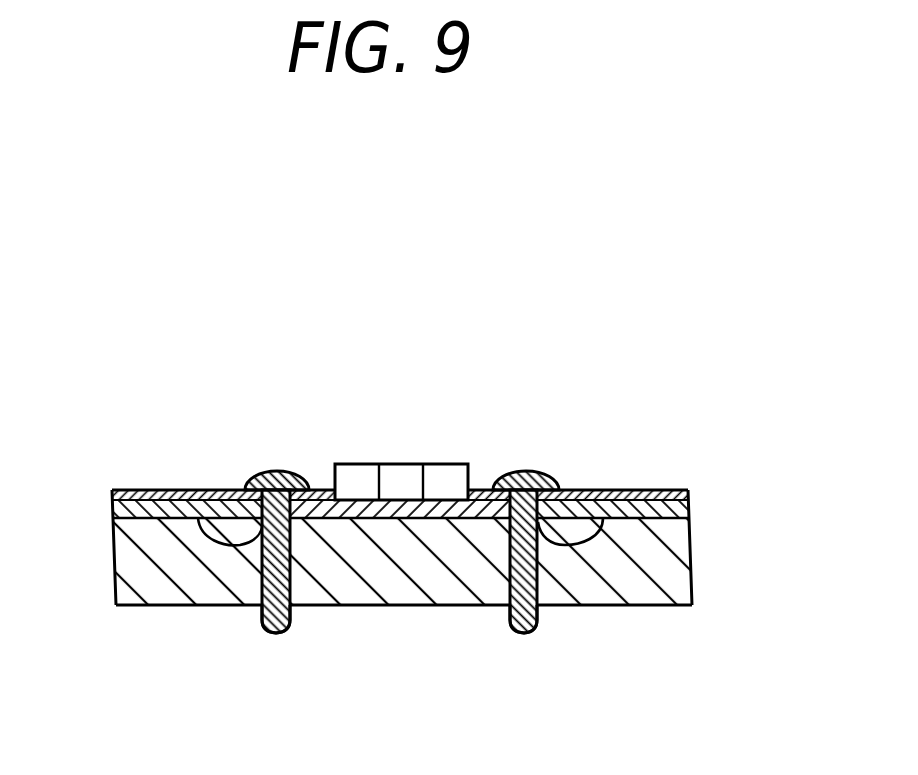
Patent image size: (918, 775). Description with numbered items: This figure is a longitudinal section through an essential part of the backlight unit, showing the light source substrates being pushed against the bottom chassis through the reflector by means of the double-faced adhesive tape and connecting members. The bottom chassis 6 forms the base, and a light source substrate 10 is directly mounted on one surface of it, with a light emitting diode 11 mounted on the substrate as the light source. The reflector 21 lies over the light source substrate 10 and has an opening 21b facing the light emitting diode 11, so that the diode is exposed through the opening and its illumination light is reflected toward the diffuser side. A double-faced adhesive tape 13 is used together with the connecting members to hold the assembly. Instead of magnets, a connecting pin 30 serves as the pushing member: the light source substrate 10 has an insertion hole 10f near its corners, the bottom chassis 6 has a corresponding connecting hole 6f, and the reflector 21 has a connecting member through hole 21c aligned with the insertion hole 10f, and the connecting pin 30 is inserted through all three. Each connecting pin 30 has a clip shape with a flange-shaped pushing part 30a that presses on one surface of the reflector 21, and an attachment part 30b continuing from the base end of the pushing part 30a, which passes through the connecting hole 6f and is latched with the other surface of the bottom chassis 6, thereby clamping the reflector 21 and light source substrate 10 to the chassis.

The bottom chassis 6 is at (668, 563).
The connecting hole 6f is at (297, 605).
The light source substrate 10 is at (410, 513).
The insertion hole 10f is at (187, 490).
The light emitting diode 11 is at (402, 477).
The double-faced adhesive tape 13 is at (110, 508).
The reflector 21 is at (477, 490).
The opening 21b is at (465, 490).
The connecting member through hole 21c is at (267, 477).
The connecting pin 30 is at (250, 608).
The pushing part 30a is at (280, 477).
The attachment part 30b is at (287, 632).